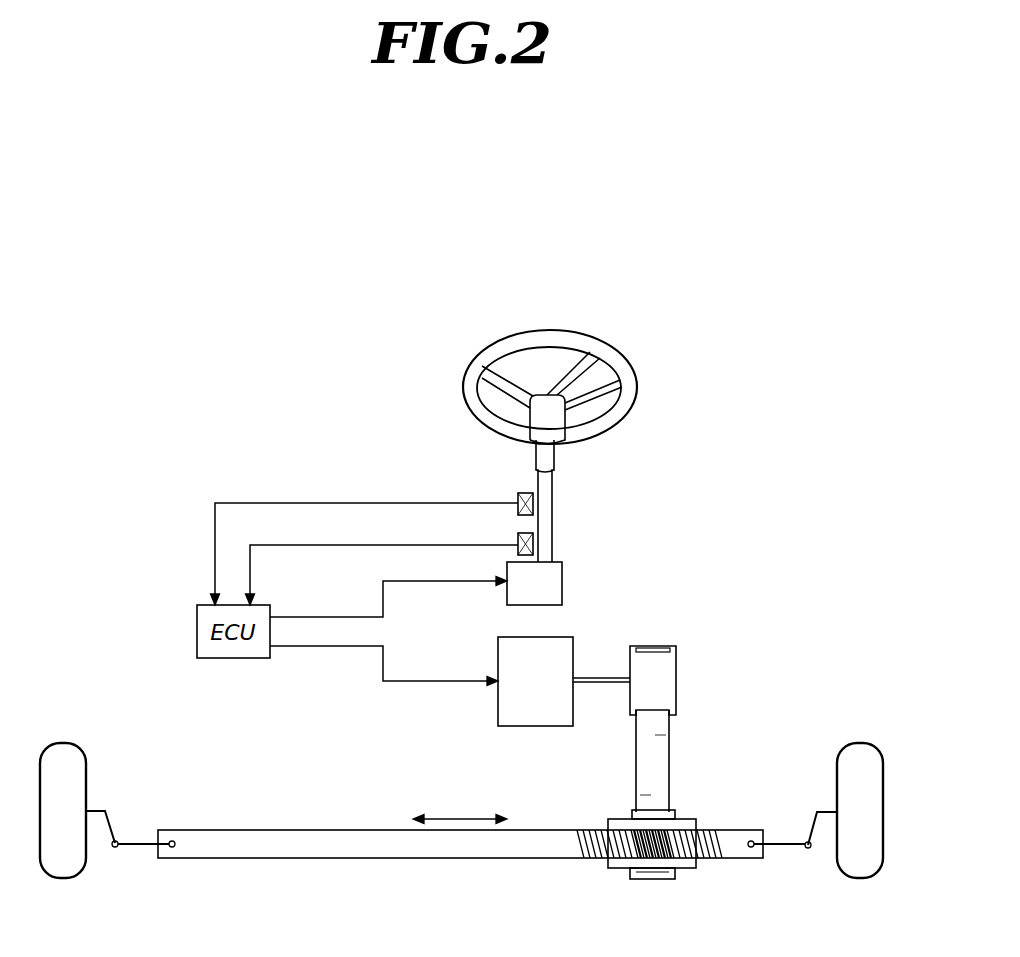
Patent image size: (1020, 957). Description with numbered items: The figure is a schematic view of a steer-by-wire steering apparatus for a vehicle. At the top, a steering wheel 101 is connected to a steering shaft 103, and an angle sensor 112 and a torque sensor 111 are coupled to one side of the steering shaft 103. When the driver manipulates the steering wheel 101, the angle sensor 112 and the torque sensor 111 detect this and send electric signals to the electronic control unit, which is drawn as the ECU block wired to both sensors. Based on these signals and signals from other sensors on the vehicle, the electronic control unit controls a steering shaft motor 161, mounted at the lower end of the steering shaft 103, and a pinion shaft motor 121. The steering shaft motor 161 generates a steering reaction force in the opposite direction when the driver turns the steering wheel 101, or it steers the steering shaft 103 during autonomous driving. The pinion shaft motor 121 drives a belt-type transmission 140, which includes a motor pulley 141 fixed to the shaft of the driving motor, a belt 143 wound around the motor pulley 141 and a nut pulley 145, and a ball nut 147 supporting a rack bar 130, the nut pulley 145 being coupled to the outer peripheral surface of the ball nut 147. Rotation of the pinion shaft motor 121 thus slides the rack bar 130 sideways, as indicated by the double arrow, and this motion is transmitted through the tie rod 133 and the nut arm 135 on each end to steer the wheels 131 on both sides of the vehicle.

The steering wheel 101 is at (630, 392).
The steering shaft 103 is at (552, 515).
The torque sensor 111 is at (518, 540).
The angle sensor 112 is at (518, 497).
The pinion shaft motor 121 is at (498, 704).
The rack bar 130 is at (374, 852).
The wheels 131 is at (75, 772).
The tie rod 133 is at (128, 848).
The nut arm 135 is at (112, 826).
The belt-type transmission 140 is at (664, 756).
The motor pulley 141 is at (665, 678).
The belt 143 is at (660, 757).
The nut pulley 145 is at (675, 815).
The ball nut 147 is at (687, 866).
The steering shaft motor 161 is at (562, 585).